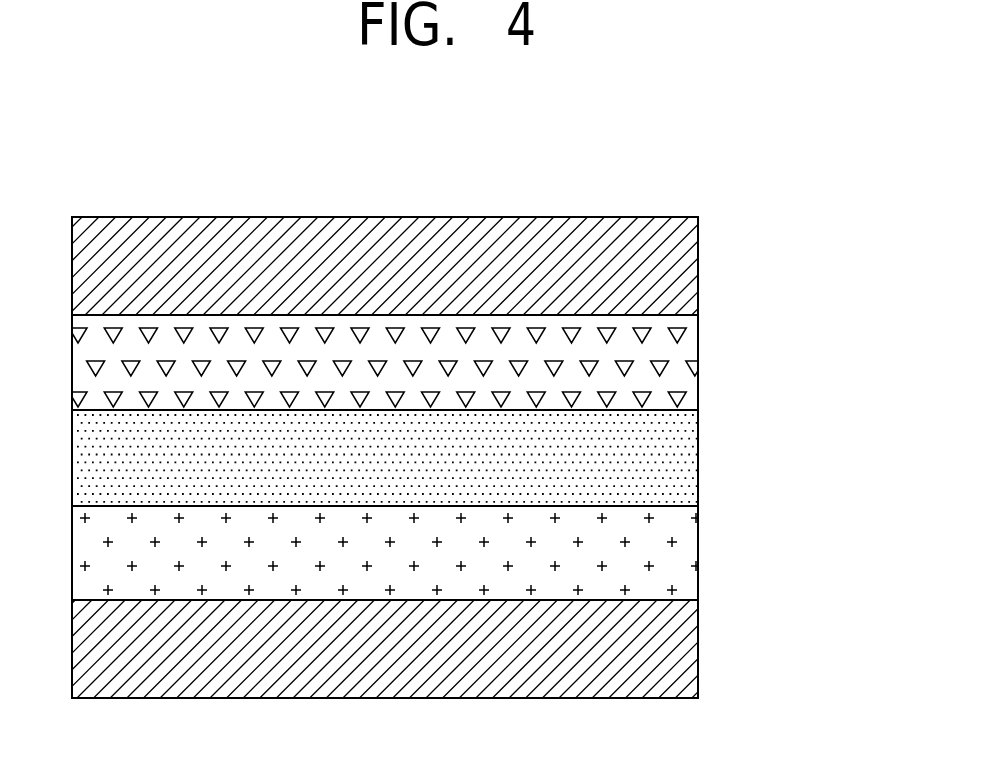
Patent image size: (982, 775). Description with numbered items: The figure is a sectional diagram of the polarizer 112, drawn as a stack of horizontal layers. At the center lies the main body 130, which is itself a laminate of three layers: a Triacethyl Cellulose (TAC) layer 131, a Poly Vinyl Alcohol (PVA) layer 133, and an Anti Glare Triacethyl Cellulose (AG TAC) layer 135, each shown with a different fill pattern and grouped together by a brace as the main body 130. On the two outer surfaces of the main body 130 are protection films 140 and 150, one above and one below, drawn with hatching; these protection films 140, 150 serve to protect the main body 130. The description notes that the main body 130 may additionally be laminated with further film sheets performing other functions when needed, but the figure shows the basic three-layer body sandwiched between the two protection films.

The polarizer 112 is at (598, 202).
The main body 130 is at (790, 340).
The Triacethyl Cellulose (TAC) layer 131 is at (680, 554).
The Poly Vinyl Alcohol (PVA) layer 133 is at (680, 459).
The Anti Glare Triacethyl Cellulose (AG TAC) layer 135 is at (680, 363).
The protection film 140 is at (678, 267).
The protection film 150 is at (680, 650).